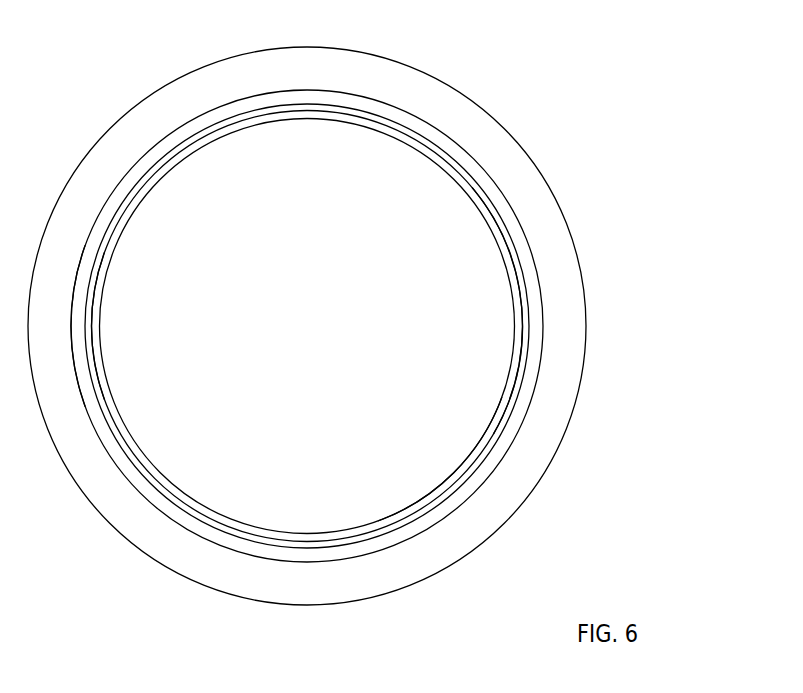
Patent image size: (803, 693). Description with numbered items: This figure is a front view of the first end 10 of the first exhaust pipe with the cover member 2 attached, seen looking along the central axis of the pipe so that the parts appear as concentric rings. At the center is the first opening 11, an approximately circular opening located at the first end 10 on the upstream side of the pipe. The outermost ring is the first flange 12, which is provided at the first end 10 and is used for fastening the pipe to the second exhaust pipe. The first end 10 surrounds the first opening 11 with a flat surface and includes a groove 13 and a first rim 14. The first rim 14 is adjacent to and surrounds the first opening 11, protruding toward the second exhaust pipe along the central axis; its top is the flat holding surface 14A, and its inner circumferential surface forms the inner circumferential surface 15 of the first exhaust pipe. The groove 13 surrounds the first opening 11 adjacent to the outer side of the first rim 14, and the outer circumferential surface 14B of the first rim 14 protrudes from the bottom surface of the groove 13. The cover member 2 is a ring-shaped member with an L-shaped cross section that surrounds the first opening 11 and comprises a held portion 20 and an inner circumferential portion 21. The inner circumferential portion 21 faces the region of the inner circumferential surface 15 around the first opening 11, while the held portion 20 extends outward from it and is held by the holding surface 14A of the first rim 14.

The first flange 12 is at (543, 172).
The first end 10 is at (546, 249).
The groove 13 is at (540, 312).
The first rim 14 is at (503, 360).
The holding surface 14A is at (515, 400).
The outer circumferential surface 14B is at (515, 417).
The inner circumferential surface 15 is at (437, 476).
The held portion 20 is at (105, 263).
The inner circumferential portion 21 is at (101, 300).
The cover member 2 is at (188, 280).
The first opening 11 is at (334, 305).